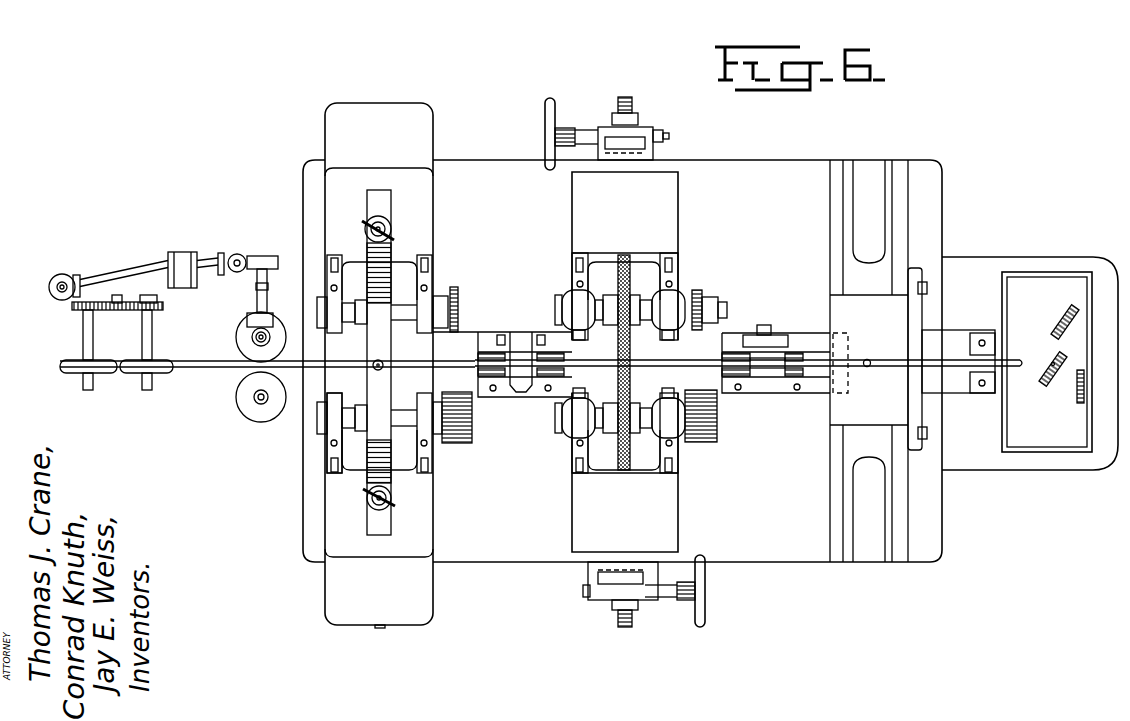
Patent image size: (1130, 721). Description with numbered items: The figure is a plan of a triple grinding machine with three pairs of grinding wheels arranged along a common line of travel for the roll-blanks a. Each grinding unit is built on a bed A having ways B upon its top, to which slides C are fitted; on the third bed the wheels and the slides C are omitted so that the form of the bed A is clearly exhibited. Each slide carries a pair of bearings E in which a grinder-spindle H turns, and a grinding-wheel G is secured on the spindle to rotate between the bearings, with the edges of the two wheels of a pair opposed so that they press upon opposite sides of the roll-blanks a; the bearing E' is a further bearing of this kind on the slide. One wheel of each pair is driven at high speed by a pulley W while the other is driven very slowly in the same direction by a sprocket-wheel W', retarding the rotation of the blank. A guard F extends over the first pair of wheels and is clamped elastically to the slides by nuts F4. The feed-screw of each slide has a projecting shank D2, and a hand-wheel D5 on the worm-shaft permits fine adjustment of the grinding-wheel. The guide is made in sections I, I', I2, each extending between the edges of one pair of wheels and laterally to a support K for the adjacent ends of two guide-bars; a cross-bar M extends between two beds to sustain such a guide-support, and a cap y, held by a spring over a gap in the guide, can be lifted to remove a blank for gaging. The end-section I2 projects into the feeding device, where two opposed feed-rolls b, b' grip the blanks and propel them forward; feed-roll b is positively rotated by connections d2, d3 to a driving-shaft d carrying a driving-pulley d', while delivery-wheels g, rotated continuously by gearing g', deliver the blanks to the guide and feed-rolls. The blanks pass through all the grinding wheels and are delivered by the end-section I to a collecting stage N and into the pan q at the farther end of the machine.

The bed A is at (443, 540).
The ways B is at (869, 361).
The slide C is at (501, 365).
The shank D2 is at (622, 96).
The hand-wheel D5 is at (543, 118).
The bearing E is at (477, 363).
The bearing pedestal E' is at (305, 448).
The guard F is at (375, 348).
The nut F4 is at (388, 236).
The grinding-wheel G is at (630, 350).
The grinder-spindle H is at (402, 408).
The guide section I is at (748, 383).
The guide section I' is at (764, 396).
The guide section I2 is at (476, 324).
The guide-support K is at (513, 395).
The cross-bar M is at (472, 385).
The collecting stage N is at (1013, 363).
The pulley W is at (590, 428).
The sprocket-wheel W' is at (587, 295).
The roll-blank a is at (1052, 362).
The feed-roll b is at (245, 337).
The feed-roll b' is at (246, 405).
The driving-shaft d is at (133, 275).
The driving-pulley d' is at (182, 256).
The connection d2 is at (257, 268).
The connection d3 is at (237, 254).
The delivery-wheel g is at (116, 363).
The gearing g' is at (117, 321).
The pan q is at (1057, 325).
The cap y is at (519, 350).